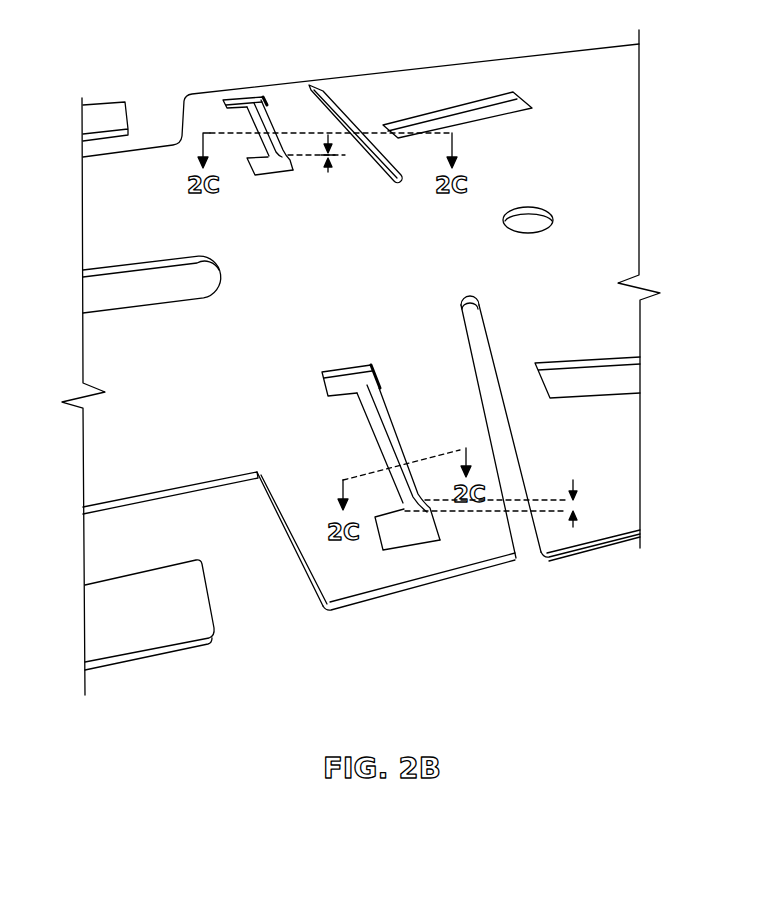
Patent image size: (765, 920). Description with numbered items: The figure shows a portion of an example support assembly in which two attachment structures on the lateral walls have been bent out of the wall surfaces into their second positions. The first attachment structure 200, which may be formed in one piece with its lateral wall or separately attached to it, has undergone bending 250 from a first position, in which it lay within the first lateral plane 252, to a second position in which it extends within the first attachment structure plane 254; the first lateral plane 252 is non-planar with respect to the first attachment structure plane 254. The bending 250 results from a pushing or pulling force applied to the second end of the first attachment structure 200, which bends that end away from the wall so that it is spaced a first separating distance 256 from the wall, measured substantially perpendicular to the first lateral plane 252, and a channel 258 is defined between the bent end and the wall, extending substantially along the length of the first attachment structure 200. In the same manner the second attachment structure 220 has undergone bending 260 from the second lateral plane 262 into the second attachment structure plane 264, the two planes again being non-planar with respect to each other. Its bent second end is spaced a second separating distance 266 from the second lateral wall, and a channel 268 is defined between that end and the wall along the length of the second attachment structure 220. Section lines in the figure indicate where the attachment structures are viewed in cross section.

The first attachment structure 200 is at (262, 128).
The second attachment structure 220 is at (396, 449).
The bending 250 is at (241, 154).
The first lateral plane 252 is at (193, 160).
The first attachment structure plane 254 is at (265, 107).
The first separating distance 256 is at (328, 172).
The channel 258 is at (250, 147).
The bending 260 is at (346, 503).
The second lateral plane 262 is at (217, 427).
The second attachment structure plane 264 is at (383, 418).
The second separating distance 266 is at (573, 527).
The channel 268 is at (370, 440).